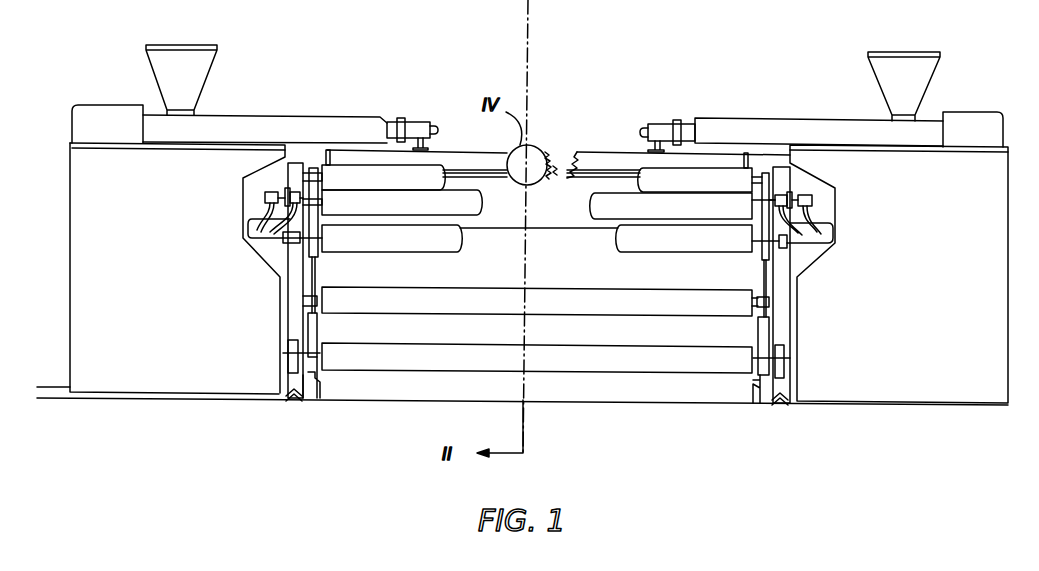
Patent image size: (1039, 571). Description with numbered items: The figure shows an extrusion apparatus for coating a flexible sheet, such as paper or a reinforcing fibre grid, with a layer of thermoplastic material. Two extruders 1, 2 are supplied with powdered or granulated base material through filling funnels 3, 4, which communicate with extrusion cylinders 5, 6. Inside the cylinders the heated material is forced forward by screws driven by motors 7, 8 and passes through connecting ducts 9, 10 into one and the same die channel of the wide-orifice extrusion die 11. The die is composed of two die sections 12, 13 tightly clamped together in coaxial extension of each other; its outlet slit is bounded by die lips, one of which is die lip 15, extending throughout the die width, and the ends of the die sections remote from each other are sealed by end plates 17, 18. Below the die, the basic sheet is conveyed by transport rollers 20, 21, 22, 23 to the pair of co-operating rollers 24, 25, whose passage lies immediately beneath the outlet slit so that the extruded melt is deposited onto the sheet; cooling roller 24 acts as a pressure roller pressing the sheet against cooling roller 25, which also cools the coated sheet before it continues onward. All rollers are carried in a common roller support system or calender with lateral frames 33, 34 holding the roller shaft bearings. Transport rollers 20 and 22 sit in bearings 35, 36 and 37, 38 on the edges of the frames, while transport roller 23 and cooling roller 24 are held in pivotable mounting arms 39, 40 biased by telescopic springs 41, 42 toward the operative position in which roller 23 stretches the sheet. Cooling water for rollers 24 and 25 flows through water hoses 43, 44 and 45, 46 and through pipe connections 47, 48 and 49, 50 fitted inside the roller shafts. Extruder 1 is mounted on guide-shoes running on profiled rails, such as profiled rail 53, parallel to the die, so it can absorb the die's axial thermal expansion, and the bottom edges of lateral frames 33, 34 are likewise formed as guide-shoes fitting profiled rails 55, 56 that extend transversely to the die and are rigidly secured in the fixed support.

The extruder 1 is at (164, 288).
The extruder 2 is at (952, 300).
The filling funnel 3 is at (207, 72).
The filling funnel 4 is at (882, 78).
The extrusion cylinder 5 is at (296, 118).
The extrusion cylinder 6 is at (810, 121).
The motor 7 is at (113, 108).
The motor 8 is at (982, 113).
The connecting duct 9 is at (434, 139).
The connecting duct 10 is at (648, 140).
The wide-orifice extrusion die 11 is at (530, 150).
The die section 12 is at (497, 153).
The die section 13 is at (592, 156).
The die lip 15 is at (500, 178).
The end plate 17 is at (328, 152).
The end plate 18 is at (746, 152).
The transport roller 20 is at (661, 373).
The transport roller 21 is at (661, 314).
The transport roller 22 is at (657, 253).
The transport roller 23 is at (385, 184).
The cooling roller 24 is at (592, 197).
The cooling roller 25 is at (508, 229).
The lateral frame 33 is at (295, 284).
The lateral frame 34 is at (783, 293).
The bearing 35 is at (288, 360).
The bearing 36 is at (787, 363).
The bearing 37 is at (282, 245).
The bearing 38 is at (795, 248).
The pivotable mounting arm 39 is at (313, 245).
The pivotable mounting arm 40 is at (762, 258).
The telescopic spring 41 is at (315, 332).
The telescopic spring 42 is at (758, 334).
The water hose 43 is at (292, 240).
The water hose 44 is at (790, 243).
The water hose 45 is at (255, 224).
The water hose 46 is at (832, 232).
The pipe connection 47 is at (287, 190).
The pipe connection 48 is at (780, 196).
The pipe connection 49 is at (270, 192).
The pipe connection 50 is at (812, 200).
The profiled rail 53 is at (53, 387).
The profiled rail 55 is at (293, 401).
The profiled rail 56 is at (781, 406).